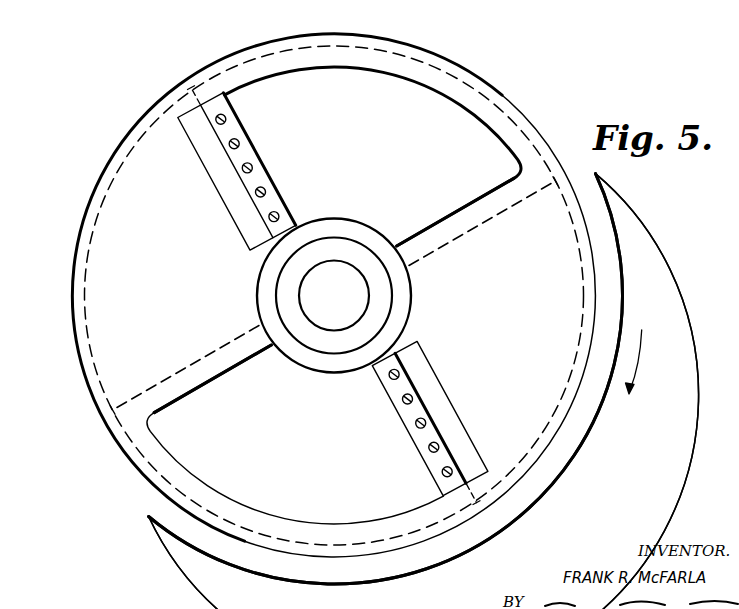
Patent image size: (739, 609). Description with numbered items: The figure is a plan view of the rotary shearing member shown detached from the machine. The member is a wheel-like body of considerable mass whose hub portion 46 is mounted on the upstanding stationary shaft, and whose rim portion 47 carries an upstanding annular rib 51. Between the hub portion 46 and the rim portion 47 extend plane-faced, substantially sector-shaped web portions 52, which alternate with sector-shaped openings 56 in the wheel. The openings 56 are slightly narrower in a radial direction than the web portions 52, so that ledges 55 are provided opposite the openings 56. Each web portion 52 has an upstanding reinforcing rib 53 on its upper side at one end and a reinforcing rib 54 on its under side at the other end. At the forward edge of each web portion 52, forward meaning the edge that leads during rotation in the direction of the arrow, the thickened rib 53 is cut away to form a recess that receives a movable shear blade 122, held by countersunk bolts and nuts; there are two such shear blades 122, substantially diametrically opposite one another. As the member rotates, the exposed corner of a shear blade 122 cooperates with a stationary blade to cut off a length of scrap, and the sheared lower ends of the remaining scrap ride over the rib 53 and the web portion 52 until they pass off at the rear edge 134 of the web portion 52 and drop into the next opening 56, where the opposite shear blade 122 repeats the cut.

The hub portion 46 is at (375, 232).
The rim portion 47 is at (580, 215).
The upstanding annular rib 51 is at (540, 110).
The web portions 52 is at (562, 303).
The upstanding reinforcing ribs 53 is at (233, 197).
The reinforcing ribs 54 is at (465, 225).
The ledges 55 is at (465, 90).
The sector-shaped openings 56 is at (393, 93).
The movable shear blade 122 is at (260, 163).
The rear edge 134 is at (452, 217).